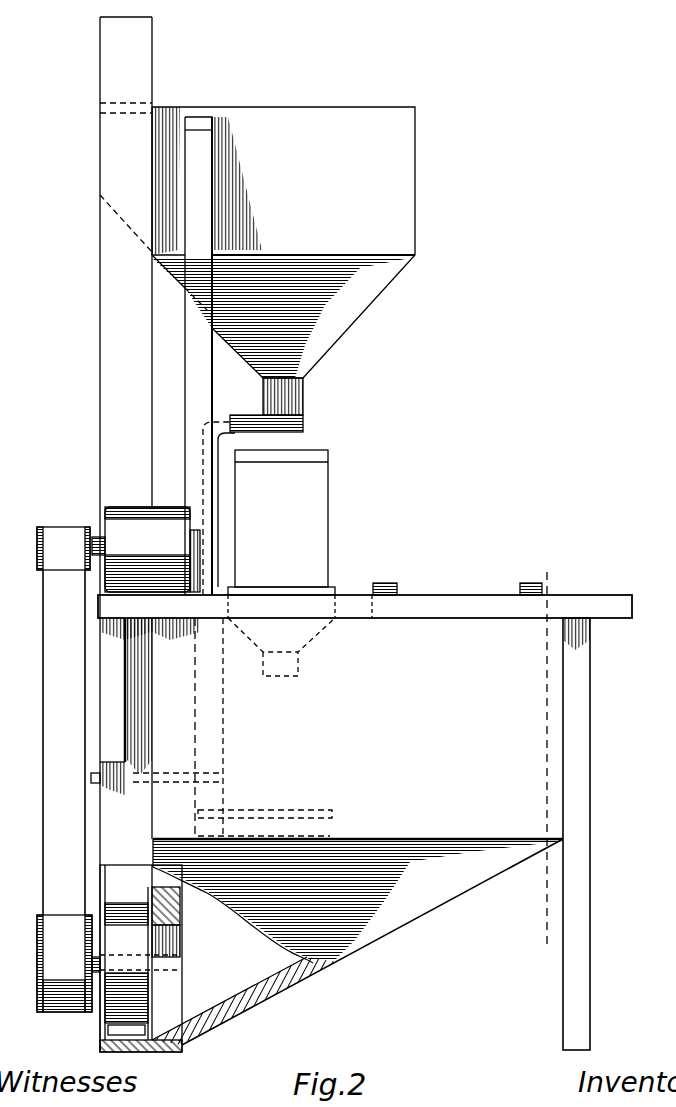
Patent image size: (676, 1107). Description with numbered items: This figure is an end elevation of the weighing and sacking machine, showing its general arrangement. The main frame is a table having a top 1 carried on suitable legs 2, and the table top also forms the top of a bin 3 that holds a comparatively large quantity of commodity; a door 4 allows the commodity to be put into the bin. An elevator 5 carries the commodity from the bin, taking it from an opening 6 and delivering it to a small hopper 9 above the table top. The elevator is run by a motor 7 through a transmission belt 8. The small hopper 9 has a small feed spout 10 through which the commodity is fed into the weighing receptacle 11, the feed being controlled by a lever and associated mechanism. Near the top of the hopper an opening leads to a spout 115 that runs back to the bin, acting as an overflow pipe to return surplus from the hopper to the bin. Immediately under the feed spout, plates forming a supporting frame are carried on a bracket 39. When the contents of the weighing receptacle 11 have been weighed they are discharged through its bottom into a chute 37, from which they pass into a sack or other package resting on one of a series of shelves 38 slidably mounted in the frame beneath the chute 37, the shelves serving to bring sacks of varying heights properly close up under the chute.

The table top 1 is at (552, 571).
The legs 2 is at (126, 676).
The bin 3 is at (342, 957).
The door 4 is at (378, 603).
The elevator 5 is at (98, 437).
The opening 6 is at (160, 945).
The motor 7 is at (118, 512).
The transmission belt 8 is at (38, 750).
The small hopper 9 is at (352, 315).
The feed spout 10 is at (305, 393).
The weighing receptacle 11 is at (332, 500).
The spout 115 is at (212, 385).
The chute 37 is at (335, 588).
The shelves 38 is at (222, 773).
The bracket 39 is at (222, 445).